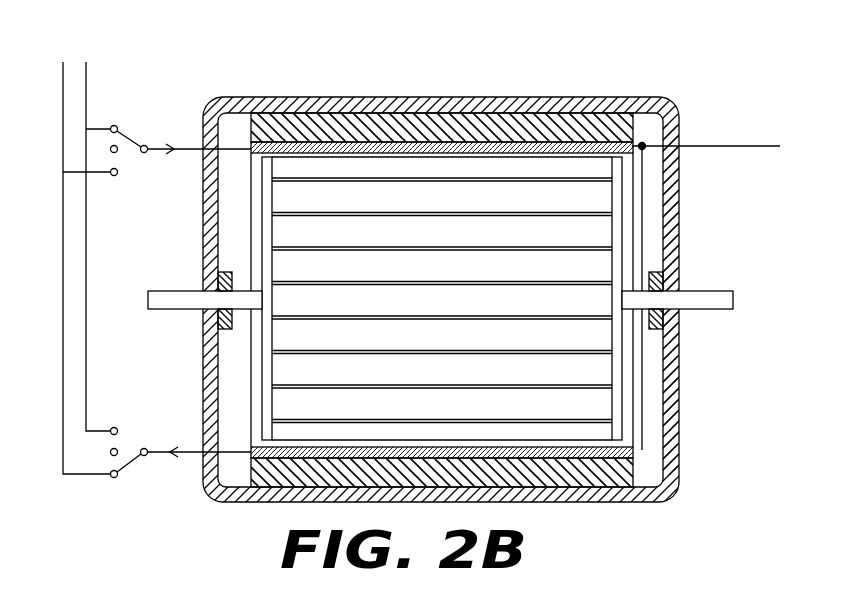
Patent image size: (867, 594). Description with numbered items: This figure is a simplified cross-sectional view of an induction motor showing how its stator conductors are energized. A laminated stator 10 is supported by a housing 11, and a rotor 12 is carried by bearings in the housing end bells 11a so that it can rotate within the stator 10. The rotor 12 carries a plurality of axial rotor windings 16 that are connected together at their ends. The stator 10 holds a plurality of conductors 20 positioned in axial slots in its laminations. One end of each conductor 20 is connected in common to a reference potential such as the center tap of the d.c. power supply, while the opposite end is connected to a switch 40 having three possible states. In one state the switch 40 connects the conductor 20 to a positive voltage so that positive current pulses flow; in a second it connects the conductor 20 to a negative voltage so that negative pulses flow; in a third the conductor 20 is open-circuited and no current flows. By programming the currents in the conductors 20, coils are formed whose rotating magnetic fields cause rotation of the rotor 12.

The laminated stator 10 is at (264, 140).
The housing 11 is at (327, 97).
The housing end bells 11a is at (680, 216).
The rotor 12 is at (262, 226).
The axial rotor windings 16 is at (410, 248).
The conductors 20 is at (252, 156).
The switch 40 is at (129, 138).